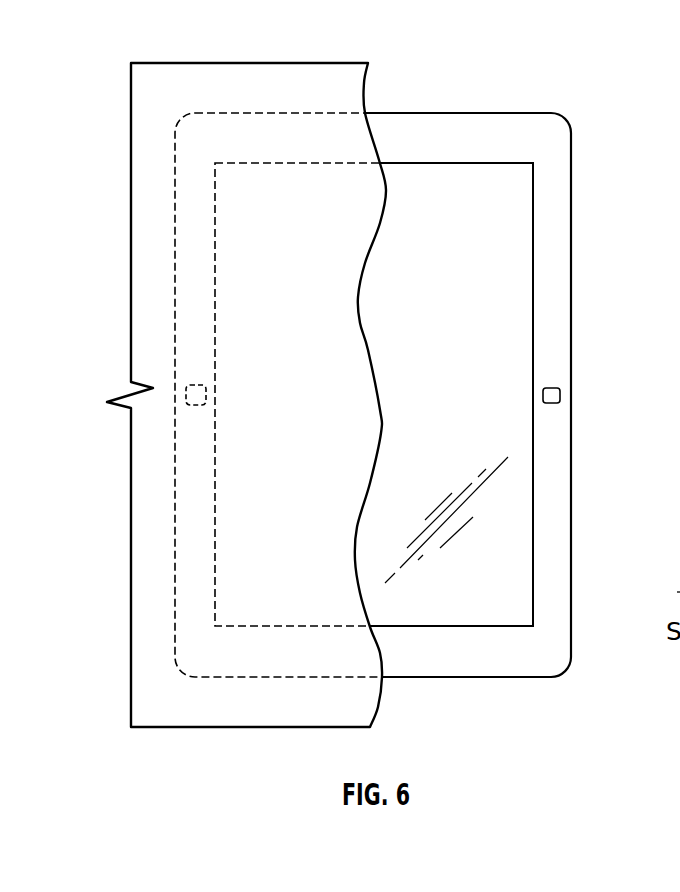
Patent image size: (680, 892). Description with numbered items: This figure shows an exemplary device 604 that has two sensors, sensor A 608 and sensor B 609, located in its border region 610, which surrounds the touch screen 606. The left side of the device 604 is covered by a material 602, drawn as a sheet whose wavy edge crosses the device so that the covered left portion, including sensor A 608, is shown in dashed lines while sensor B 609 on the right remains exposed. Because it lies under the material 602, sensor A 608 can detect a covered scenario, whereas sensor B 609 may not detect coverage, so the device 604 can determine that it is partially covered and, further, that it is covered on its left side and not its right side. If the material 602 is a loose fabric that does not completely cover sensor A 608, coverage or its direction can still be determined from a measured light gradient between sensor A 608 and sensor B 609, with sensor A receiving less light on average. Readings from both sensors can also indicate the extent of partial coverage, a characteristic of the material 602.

The material 602 is at (297, 80).
The device 604 is at (537, 92).
The touch screen 606 is at (510, 268).
The sensor A 608 is at (195, 383).
The sensor B 609 is at (552, 387).
The border region 610 is at (407, 648).